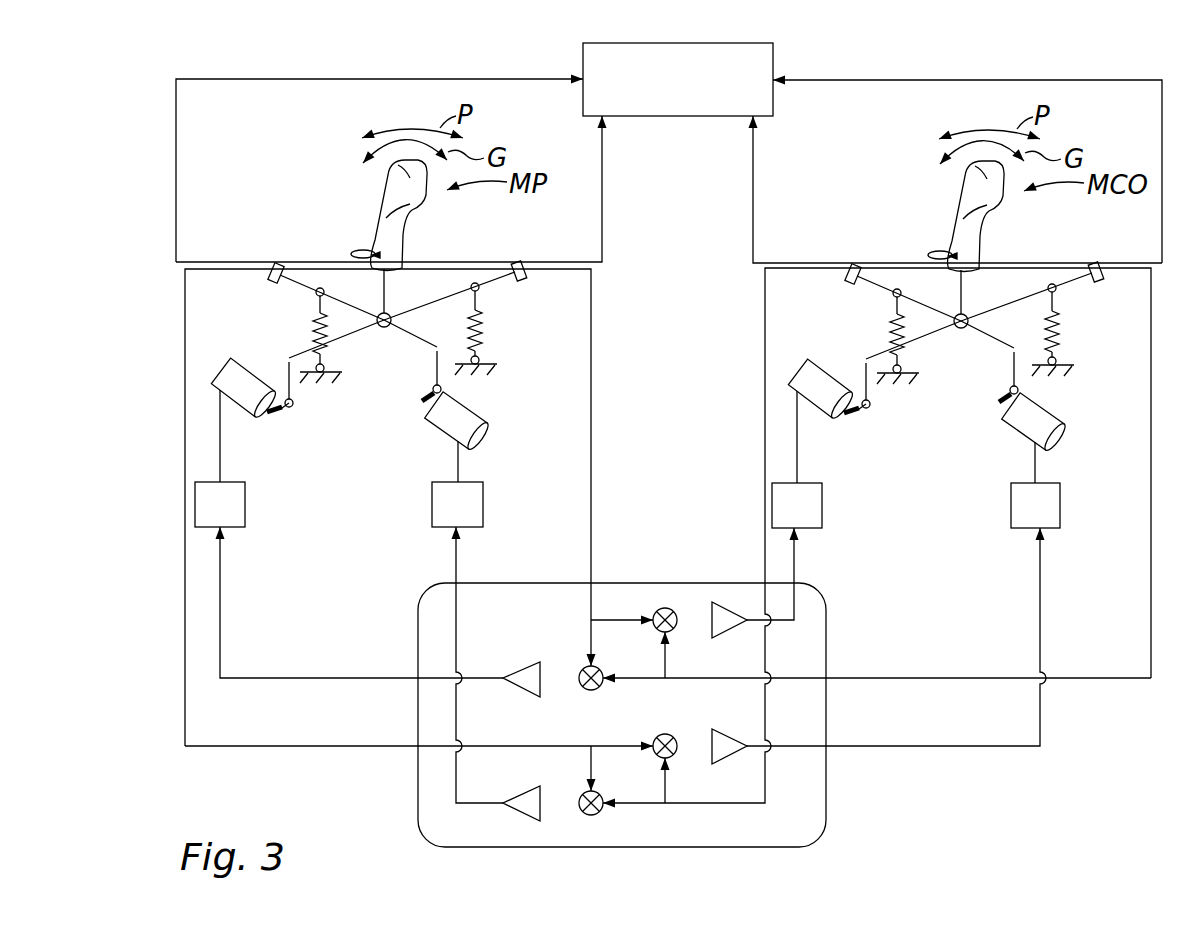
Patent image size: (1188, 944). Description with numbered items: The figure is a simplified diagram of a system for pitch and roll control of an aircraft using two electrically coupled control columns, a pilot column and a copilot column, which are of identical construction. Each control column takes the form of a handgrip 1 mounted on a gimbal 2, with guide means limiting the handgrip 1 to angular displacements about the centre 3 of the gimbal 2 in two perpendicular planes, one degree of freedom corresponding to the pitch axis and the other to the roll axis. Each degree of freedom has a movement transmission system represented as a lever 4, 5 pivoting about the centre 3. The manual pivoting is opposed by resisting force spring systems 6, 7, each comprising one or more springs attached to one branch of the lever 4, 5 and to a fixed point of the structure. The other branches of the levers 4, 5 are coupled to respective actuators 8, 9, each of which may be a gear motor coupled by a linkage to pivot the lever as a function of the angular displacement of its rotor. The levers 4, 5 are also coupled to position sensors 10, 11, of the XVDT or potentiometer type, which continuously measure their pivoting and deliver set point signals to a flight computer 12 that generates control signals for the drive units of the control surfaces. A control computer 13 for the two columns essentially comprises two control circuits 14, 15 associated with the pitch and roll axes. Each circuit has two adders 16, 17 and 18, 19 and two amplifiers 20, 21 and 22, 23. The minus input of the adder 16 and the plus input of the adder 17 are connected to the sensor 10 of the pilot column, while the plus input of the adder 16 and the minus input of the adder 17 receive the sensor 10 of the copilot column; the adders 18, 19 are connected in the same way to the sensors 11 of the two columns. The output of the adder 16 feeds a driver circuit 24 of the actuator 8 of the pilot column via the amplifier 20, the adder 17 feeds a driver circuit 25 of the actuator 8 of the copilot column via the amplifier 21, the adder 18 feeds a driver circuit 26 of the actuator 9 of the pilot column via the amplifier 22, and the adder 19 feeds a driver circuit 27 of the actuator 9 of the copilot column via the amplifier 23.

The handgrip 1 is at (398, 233).
The gimbal 2 is at (383, 330).
The centre of the gimbal 3 is at (390, 313).
The lever 4 is at (423, 309).
The lever 5 is at (297, 293).
The resisting force spring system 6 is at (490, 328).
The resisting force spring system 7 is at (307, 333).
The actuator 8 is at (247, 405).
The actuator 9 is at (470, 417).
The position sensor 10 is at (521, 263).
The position sensor 11 is at (278, 263).
The flight computer 12 is at (735, 62).
The control computer 13 is at (830, 641).
The control circuit 14 is at (567, 609).
The control circuit 15 is at (746, 822).
The adder 16 is at (591, 691).
The adder 17 is at (670, 607).
The adder 18 is at (588, 815).
The adder 19 is at (655, 757).
The amplifier 20 is at (518, 683).
The amplifier 21 is at (720, 627).
The amplifier 22 is at (519, 808).
The amplifier 23 is at (720, 754).
The driver circuit 24 is at (245, 503).
The driver circuit 25 is at (822, 504).
The driver circuit 26 is at (483, 503).
The driver circuit 27 is at (1060, 504).